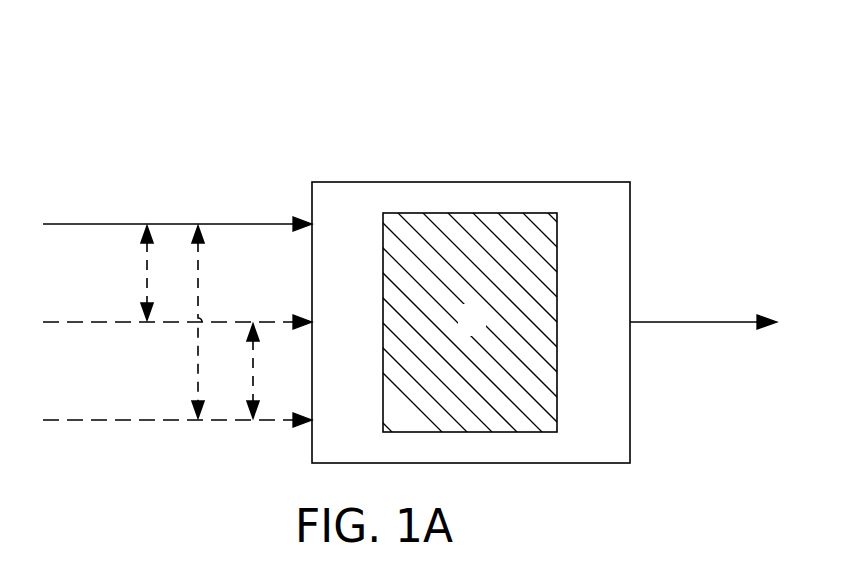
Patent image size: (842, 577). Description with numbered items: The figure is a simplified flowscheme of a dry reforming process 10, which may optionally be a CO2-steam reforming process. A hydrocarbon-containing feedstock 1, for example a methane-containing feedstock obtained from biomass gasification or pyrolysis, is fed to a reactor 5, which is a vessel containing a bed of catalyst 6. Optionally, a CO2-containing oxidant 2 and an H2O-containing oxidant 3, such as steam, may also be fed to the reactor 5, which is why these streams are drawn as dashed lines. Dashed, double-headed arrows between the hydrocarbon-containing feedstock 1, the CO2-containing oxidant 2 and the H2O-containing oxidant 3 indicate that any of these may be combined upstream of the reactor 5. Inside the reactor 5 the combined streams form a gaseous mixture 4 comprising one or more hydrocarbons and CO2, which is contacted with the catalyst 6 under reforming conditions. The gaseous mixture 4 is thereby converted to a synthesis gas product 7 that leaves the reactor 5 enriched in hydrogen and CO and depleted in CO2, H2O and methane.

The dry reforming process 10 is at (208, 109).
The hydrocarbon-containing feedstock 1 is at (85, 223).
The CO2-containing oxidant 2 is at (85, 320).
The H2O-containing oxidant 3 is at (85, 418).
The gaseous mixture 4 is at (350, 334).
The reactor 5 is at (613, 181).
The catalyst 6 is at (480, 334).
The synthesis gas product 7 is at (703, 321).